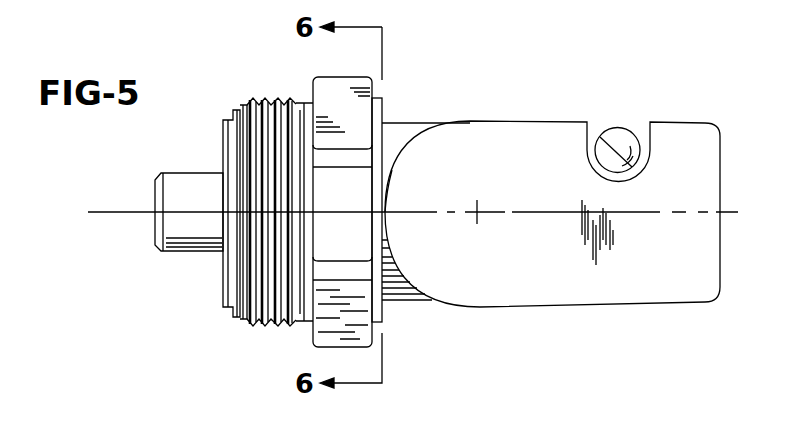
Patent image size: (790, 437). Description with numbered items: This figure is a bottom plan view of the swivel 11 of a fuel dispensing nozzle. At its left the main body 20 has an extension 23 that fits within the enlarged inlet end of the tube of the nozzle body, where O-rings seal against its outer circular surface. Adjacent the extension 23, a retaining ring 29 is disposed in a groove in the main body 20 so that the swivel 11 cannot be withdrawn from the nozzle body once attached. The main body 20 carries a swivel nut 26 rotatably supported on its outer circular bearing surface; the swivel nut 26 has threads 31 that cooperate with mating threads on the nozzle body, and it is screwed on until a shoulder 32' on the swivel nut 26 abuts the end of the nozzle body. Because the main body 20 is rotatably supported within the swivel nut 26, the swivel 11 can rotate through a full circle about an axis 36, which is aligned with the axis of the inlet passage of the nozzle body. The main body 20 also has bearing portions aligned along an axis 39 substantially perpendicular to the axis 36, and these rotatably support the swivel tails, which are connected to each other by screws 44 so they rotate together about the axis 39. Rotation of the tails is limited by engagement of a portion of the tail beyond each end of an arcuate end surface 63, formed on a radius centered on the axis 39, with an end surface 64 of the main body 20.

The swivel 11 is at (510, 92).
The main body 20 is at (412, 309).
The extension 23 is at (185, 177).
The swivel nut 26 is at (322, 82).
The retaining ring 29 is at (233, 283).
The threads 31 is at (252, 100).
The shoulder 32' is at (307, 237).
The axis 36 is at (103, 210).
The axis 39 is at (477, 208).
The screws 44 is at (618, 130).
The end surface 63 is at (395, 167).
The end surface 64 is at (400, 262).